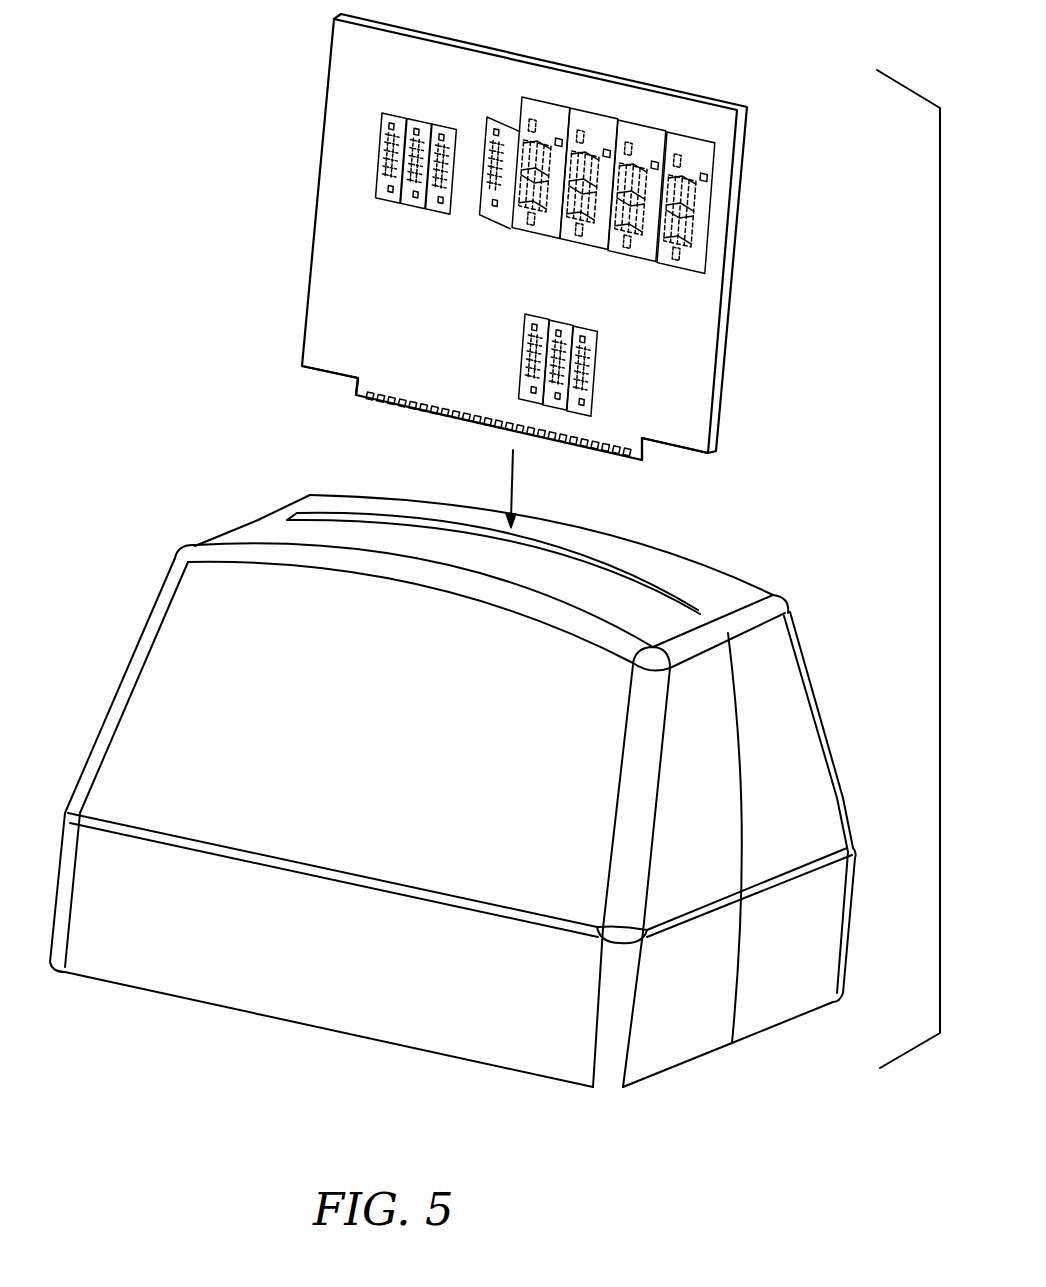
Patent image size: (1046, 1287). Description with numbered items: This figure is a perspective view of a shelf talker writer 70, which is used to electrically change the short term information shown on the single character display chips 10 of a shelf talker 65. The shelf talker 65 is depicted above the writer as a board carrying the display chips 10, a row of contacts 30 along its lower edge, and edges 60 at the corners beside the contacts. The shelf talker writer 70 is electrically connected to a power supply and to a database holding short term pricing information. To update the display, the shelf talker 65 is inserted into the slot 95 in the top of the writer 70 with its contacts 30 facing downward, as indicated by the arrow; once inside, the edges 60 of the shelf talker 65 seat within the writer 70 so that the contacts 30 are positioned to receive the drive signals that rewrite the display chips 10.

The single character display chips 10 is at (702, 230).
The contacts 30 is at (628, 457).
The edges 60 is at (322, 371).
The shelf talker 65 is at (747, 135).
The shelf talker writer 70 is at (157, 597).
The slot 95 is at (687, 598).